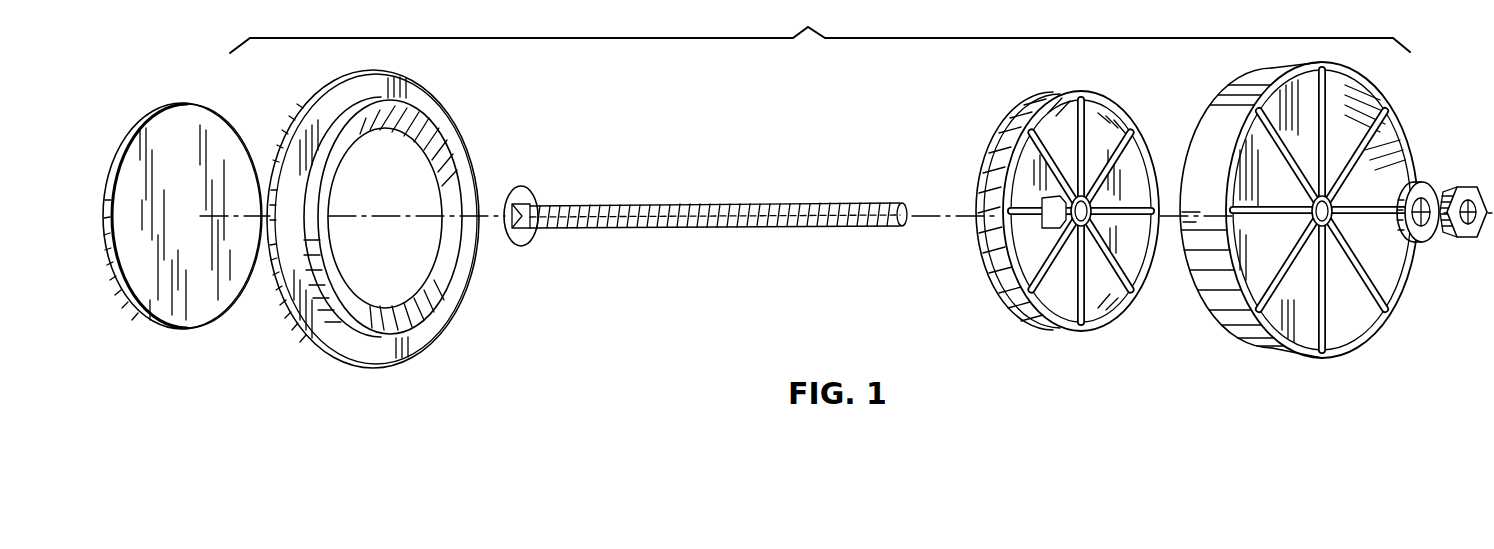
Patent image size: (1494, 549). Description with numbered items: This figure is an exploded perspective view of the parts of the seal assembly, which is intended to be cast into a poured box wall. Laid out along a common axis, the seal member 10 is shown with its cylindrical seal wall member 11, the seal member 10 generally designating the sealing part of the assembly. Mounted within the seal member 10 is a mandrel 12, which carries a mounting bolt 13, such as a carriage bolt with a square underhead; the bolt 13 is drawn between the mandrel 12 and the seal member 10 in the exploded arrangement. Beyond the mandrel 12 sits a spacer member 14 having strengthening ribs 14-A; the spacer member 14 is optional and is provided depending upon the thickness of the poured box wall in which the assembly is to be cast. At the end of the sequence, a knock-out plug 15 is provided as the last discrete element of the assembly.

The seal member 10 is at (420, 95).
The cylindrical seal wall member 11 is at (455, 170).
The mandrel 12 is at (1072, 92).
The mounting bolt 13 is at (775, 205).
The spacer member 14 is at (1375, 64).
The strengthening ribs 14-A is at (1345, 158).
The knock-out plug 15 is at (225, 128).